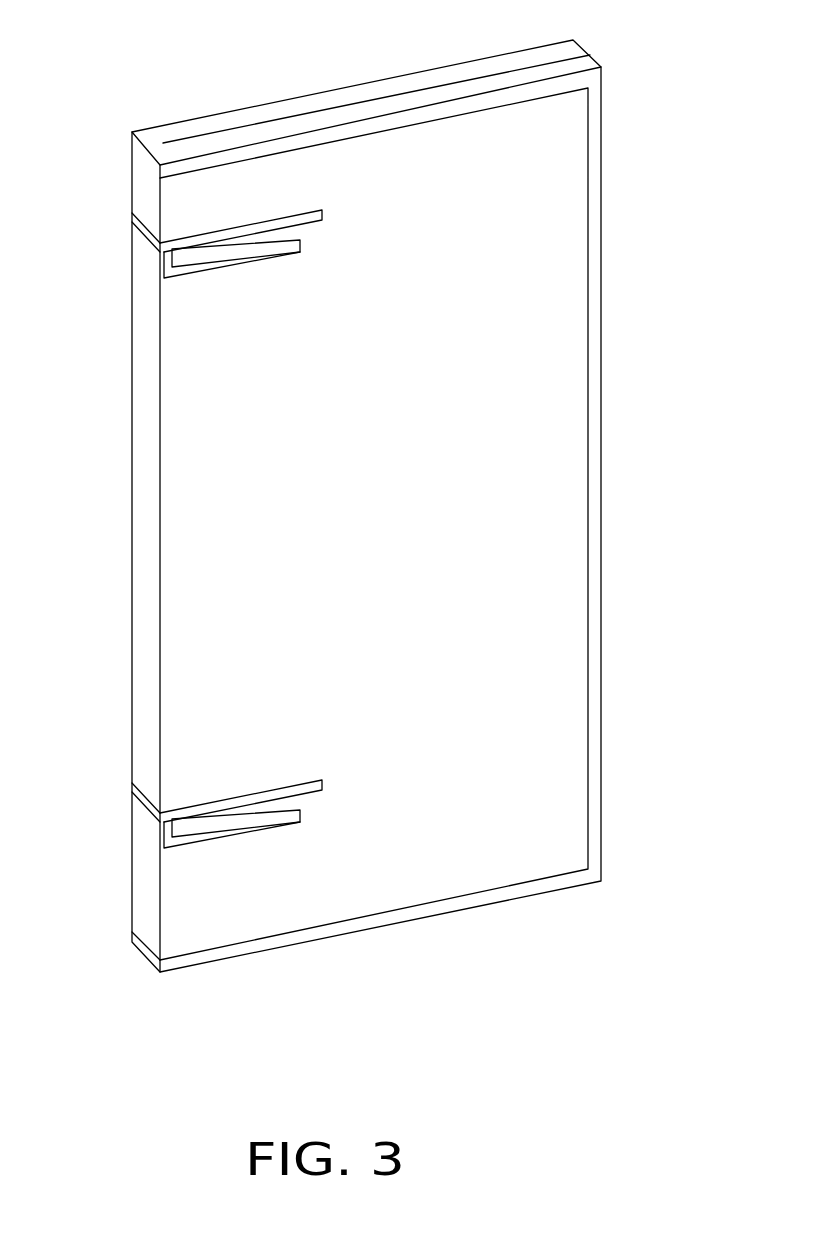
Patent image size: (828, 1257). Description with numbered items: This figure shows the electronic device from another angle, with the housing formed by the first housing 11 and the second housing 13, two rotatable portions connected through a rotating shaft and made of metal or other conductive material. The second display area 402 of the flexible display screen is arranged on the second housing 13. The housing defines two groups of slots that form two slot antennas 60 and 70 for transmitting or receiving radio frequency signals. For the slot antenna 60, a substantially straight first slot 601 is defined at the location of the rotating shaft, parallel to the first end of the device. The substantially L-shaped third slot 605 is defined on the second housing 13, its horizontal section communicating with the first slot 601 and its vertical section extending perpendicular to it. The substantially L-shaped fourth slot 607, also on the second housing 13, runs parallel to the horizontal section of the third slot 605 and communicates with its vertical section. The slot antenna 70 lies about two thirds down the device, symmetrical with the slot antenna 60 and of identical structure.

The first housing 11 is at (537, 53).
The second housing 13 is at (565, 68).
The second display area 402 is at (560, 435).
The slot antenna 60 is at (188, 213).
The first slot 601 is at (136, 226).
The third slot 605 is at (242, 233).
The fourth slot 607 is at (223, 262).
The slot antenna 70 is at (187, 795).